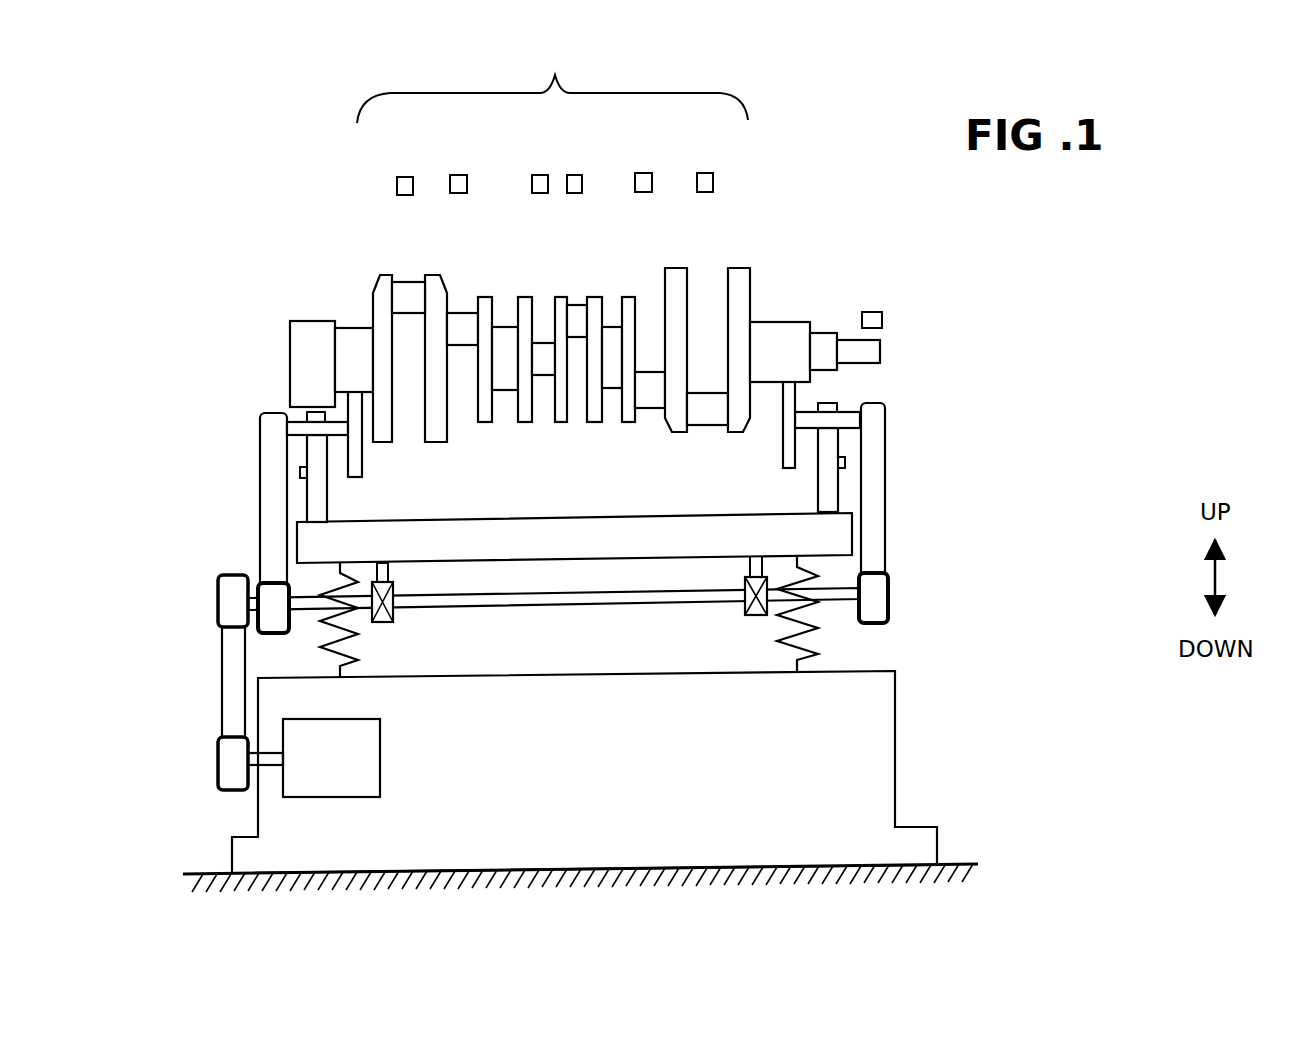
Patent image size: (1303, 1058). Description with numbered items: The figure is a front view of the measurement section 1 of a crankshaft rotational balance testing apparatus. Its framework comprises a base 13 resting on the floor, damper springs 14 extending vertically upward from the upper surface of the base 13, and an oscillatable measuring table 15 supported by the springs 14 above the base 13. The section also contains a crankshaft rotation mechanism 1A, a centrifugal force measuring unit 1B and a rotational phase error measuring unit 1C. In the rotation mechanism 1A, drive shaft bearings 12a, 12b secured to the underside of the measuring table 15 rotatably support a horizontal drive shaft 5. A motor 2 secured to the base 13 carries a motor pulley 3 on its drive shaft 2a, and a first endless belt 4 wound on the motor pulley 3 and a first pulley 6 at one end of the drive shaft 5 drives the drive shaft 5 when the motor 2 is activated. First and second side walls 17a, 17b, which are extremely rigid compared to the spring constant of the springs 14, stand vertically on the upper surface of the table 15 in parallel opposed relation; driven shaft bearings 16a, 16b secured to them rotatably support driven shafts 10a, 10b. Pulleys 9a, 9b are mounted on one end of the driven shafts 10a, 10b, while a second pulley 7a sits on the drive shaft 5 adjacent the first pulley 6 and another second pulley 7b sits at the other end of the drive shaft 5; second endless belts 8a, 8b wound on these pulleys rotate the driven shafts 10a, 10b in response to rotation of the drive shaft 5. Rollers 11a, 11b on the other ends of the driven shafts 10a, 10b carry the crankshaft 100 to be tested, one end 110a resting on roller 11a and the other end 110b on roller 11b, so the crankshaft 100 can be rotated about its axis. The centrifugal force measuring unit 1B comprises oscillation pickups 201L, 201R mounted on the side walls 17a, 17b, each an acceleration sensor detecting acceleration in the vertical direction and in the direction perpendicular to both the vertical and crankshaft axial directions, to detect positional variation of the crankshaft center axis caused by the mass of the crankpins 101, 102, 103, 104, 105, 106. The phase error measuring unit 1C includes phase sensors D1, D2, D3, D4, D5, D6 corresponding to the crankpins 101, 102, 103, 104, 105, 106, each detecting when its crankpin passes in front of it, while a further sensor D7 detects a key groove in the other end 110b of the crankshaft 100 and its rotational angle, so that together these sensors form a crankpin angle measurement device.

The measurement section 1 is at (1003, 585).
The crankshaft rotation mechanism 1A is at (905, 630).
The centrifugal force measuring unit 1B is at (879, 437).
The rotational phase error measuring unit 1C is at (552, 119).
The motor 2 is at (367, 760).
The drive shaft of the motor 2a is at (265, 765).
The motor pulley 3 is at (218, 762).
The first endless belt 4 is at (222, 676).
The horizontal drive shaft 5 is at (578, 605).
The first pulley 6 is at (218, 604).
The second pulley 7a is at (293, 623).
The second pulley 7b is at (888, 598).
The second endless belt 8a is at (270, 513).
The second endless belt 8b is at (877, 537).
The pulley 9a is at (260, 420).
The pulley 9b is at (883, 417).
The driven shaft 10a is at (293, 420).
The driven shaft 10b is at (845, 403).
The roller 11a is at (362, 460).
The roller 11b is at (783, 455).
The drive shaft bearing 12a is at (393, 620).
The drive shaft bearing 12b is at (748, 612).
The base 13 is at (878, 730).
The damper springs 14 is at (350, 612).
The measuring table 15 is at (570, 515).
The driven shaft bearing 16a is at (307, 437).
The driven shaft bearing 16b is at (838, 432).
The first side wall 17a is at (327, 500).
The second side wall 17b is at (818, 490).
The crankshaft 100 is at (797, 245).
The crankpin 101 is at (402, 275).
The crankpin 102 is at (457, 305).
The crankpin 103 is at (537, 422).
The crankpin 104 is at (576, 305).
The crankpin 105 is at (653, 408).
The crankpin 106 is at (708, 425).
The one end of the crankshaft 110a is at (352, 328).
The other end of the crankshaft 110b is at (793, 328).
The oscillation pickup 201L is at (293, 470).
The oscillation pickup 201R is at (845, 460).
The phase sensor D1 is at (405, 177).
The phase sensor D2 is at (459, 175).
The phase sensor D3 is at (540, 175).
The phase sensor D4 is at (575, 175).
The phase sensor D5 is at (644, 173).
The phase sensor D6 is at (705, 173).
The sensor D7 is at (882, 320).